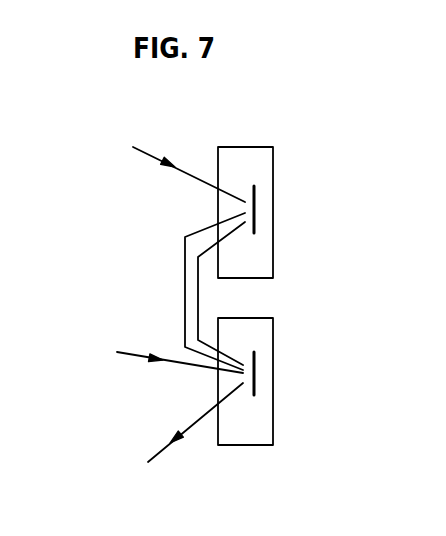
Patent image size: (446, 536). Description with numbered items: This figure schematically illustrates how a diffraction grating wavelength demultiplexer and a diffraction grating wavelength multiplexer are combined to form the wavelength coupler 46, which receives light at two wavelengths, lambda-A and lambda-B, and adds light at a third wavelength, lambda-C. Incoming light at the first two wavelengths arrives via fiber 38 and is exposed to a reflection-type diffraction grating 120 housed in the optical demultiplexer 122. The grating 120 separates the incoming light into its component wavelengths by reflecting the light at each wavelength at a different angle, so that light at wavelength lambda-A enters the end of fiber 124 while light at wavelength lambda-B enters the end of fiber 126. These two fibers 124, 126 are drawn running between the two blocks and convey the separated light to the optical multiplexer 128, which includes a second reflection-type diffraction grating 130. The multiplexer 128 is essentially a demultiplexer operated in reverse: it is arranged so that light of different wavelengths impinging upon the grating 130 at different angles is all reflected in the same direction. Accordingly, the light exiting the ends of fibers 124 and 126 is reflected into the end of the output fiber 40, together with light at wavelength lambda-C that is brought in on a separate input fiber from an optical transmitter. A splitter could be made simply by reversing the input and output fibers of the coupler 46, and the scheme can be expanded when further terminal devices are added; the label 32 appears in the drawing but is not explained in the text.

The optical demultiplexer 122 is at (252, 160).
The reflection-type diffraction grating 120 is at (258, 218).
The optical multiplexer 128 is at (255, 440).
The reflection-type diffraction grating 130 is at (258, 372).
The fiber 124 is at (185, 297).
The fiber 126 is at (200, 303).
The fiber 38 is at (152, 157).
The second input light beam 32 is at (142, 358).
The fiber 40 is at (165, 452).
The coupler 46 is at (100, 264).